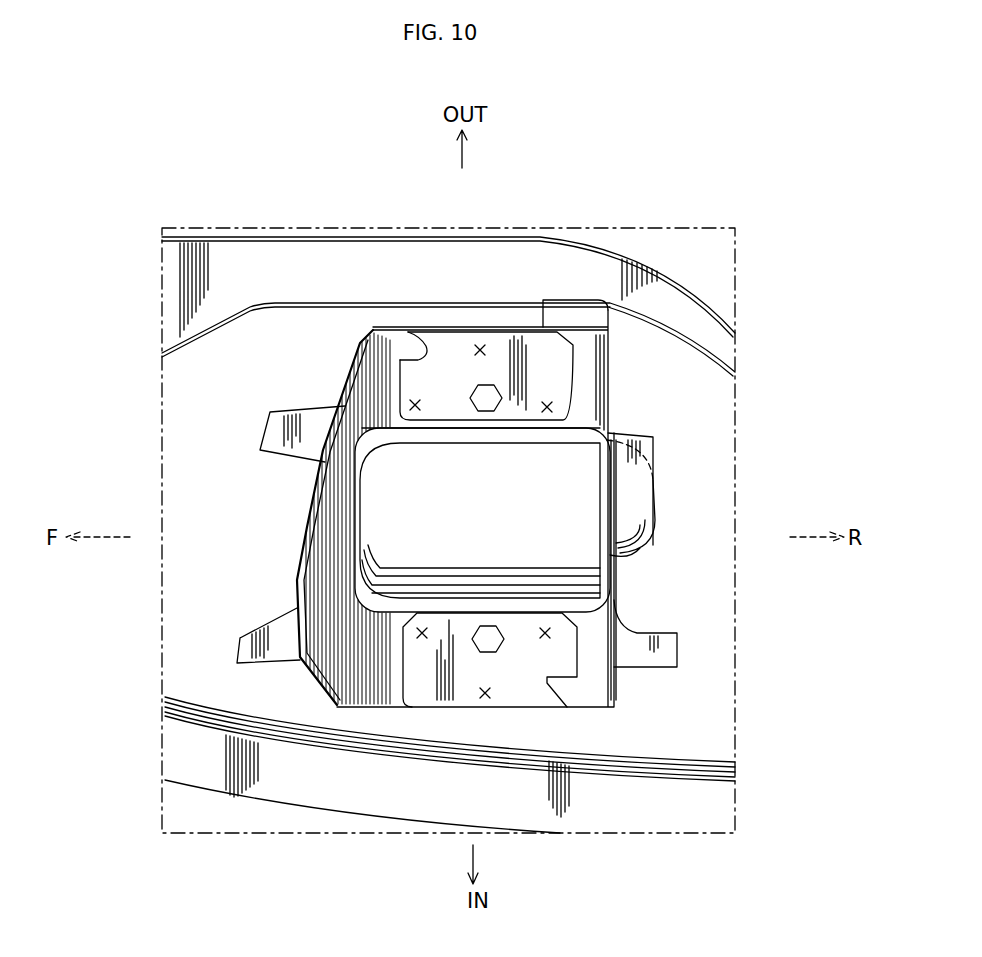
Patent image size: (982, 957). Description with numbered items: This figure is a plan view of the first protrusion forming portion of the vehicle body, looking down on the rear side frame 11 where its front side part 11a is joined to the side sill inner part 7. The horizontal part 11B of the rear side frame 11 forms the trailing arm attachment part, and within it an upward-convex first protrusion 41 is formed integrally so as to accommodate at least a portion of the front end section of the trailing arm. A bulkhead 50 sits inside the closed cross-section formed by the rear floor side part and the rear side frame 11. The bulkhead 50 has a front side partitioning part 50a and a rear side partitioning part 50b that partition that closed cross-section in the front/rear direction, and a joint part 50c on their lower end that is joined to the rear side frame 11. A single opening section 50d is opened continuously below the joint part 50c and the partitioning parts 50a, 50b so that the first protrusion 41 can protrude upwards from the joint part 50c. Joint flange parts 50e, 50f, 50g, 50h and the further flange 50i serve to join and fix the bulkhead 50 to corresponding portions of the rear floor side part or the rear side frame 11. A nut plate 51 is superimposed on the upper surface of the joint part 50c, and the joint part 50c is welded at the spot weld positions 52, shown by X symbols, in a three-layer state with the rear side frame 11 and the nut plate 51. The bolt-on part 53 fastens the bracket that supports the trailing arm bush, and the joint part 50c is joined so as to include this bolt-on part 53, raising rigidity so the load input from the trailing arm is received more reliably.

The side sill inner part 7 is at (397, 281).
The rear side frame 11 is at (697, 562).
The front side part 11a is at (304, 309).
The horizontal part 11B is at (712, 405).
The first protrusion 41 is at (474, 522).
The bulkhead 50 is at (296, 530).
The front side partitioning part 50a is at (316, 581).
The rear side partitioning part 50b is at (610, 543).
The joint part 50c is at (403, 340).
The opening section 50d is at (522, 432).
The joint flange part 50e is at (563, 298).
The joint flange part 50f is at (656, 456).
The joint flange part 50g is at (655, 660).
The joint flange part 50h is at (274, 412).
The left lower flange of bracket 50i is at (278, 640).
The nut plate 51 is at (553, 352).
The spot weld positions 52 is at (481, 348).
The bolt-on part 53 is at (483, 403).